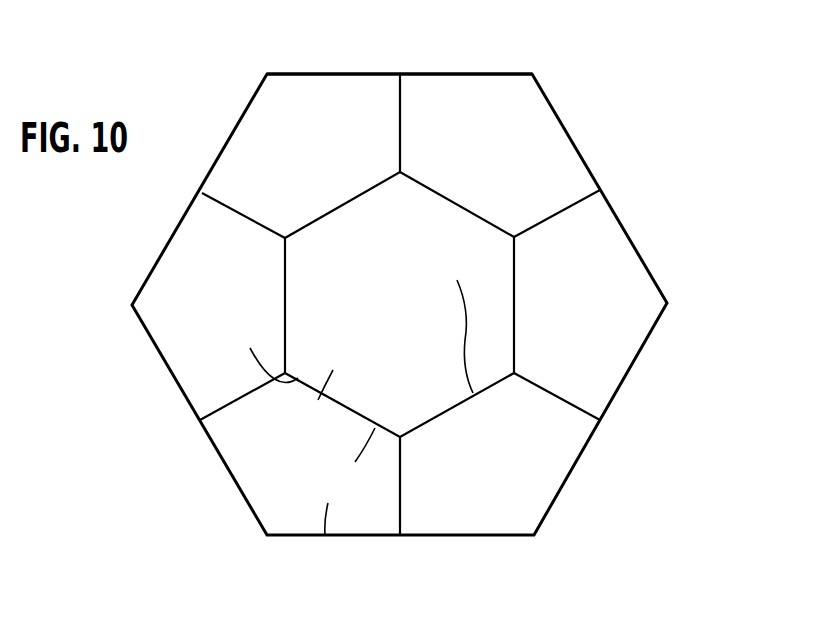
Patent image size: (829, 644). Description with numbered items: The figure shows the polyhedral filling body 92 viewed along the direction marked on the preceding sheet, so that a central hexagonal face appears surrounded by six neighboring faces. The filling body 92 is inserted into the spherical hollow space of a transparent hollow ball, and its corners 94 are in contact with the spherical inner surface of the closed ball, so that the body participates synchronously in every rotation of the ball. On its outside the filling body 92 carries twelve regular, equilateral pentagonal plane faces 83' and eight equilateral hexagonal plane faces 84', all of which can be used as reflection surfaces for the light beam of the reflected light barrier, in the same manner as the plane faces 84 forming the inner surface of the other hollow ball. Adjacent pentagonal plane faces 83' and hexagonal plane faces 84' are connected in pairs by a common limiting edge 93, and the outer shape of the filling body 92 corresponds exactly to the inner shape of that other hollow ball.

The filling body 92 is at (448, 70).
The corners 94 is at (267, 74).
The hexagonal plane faces 84' is at (399, 331).
The pentagonal plane faces 83' is at (401, 297).
The plane faces 84 is at (399, 304).
The common limiting edge 93 is at (514, 281).